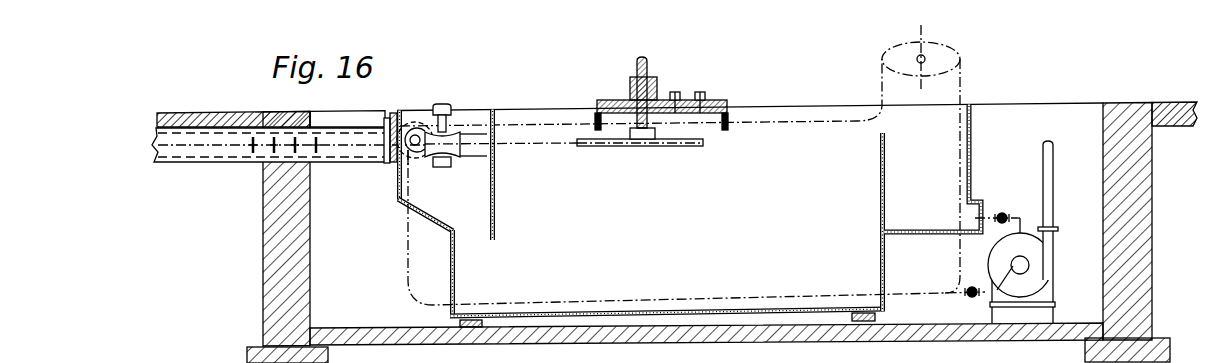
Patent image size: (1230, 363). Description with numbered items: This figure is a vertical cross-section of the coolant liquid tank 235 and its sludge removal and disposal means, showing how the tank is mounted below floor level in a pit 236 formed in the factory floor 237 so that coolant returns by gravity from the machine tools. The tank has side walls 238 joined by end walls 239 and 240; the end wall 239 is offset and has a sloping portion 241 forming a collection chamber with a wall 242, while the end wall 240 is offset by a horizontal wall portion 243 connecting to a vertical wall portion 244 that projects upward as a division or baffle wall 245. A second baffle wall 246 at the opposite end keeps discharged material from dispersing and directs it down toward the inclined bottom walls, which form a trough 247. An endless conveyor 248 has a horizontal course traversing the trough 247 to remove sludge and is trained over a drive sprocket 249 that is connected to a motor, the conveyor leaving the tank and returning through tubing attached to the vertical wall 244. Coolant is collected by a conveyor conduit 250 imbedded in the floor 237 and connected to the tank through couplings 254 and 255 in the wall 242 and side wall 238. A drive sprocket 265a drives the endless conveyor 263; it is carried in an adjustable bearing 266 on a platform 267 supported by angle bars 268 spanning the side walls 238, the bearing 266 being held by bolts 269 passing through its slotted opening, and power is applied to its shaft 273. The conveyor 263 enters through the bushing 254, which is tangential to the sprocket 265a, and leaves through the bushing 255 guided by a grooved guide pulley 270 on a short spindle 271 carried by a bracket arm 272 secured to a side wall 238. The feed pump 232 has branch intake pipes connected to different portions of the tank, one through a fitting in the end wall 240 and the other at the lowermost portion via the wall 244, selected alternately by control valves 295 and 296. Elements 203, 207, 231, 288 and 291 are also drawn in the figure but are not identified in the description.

The conduit 203 is at (1020, 218).
The conduit 207 is at (979, 236).
The exhaust pipe 231 is at (1054, 208).
The feed pump 232 is at (1040, 269).
The coolant liquid tank 235 is at (975, 140).
The pit 236 is at (1103, 155).
The floor 237 is at (216, 112).
The side walls 238 is at (803, 155).
The end wall 239 is at (452, 270).
The end wall 240 is at (975, 158).
The sloping portion 241 is at (437, 223).
The wall 242 is at (396, 188).
The horizontal wall portion 243 is at (932, 238).
The vertical wall portion 244 is at (880, 268).
The baffle wall 245 is at (880, 182).
The baffle wall 246 is at (496, 206).
The trough 247 is at (666, 311).
The endless conveyor 248 is at (760, 126).
The drive sprocket 249 is at (949, 51).
The conveyor conduit 250 is at (212, 163).
The coupling 254 is at (389, 116).
The coupling 255 is at (417, 121).
The endless conveyor 263 is at (538, 146).
The drive sprocket 265a is at (681, 147).
The adjustable bearing 266 is at (657, 85).
The platform 267 is at (608, 100).
The angle bars 268 is at (730, 112).
The bolts 269 is at (700, 91).
The guide pulley 270 is at (456, 159).
The short spindle 271 is at (412, 165).
The bracket arm 272 is at (453, 110).
The shaft 273 is at (637, 66).
The seal 288 is at (592, 117).
The blower hub 291 is at (1014, 270).
The control valve 295 is at (1000, 212).
The control valve 296 is at (970, 298).